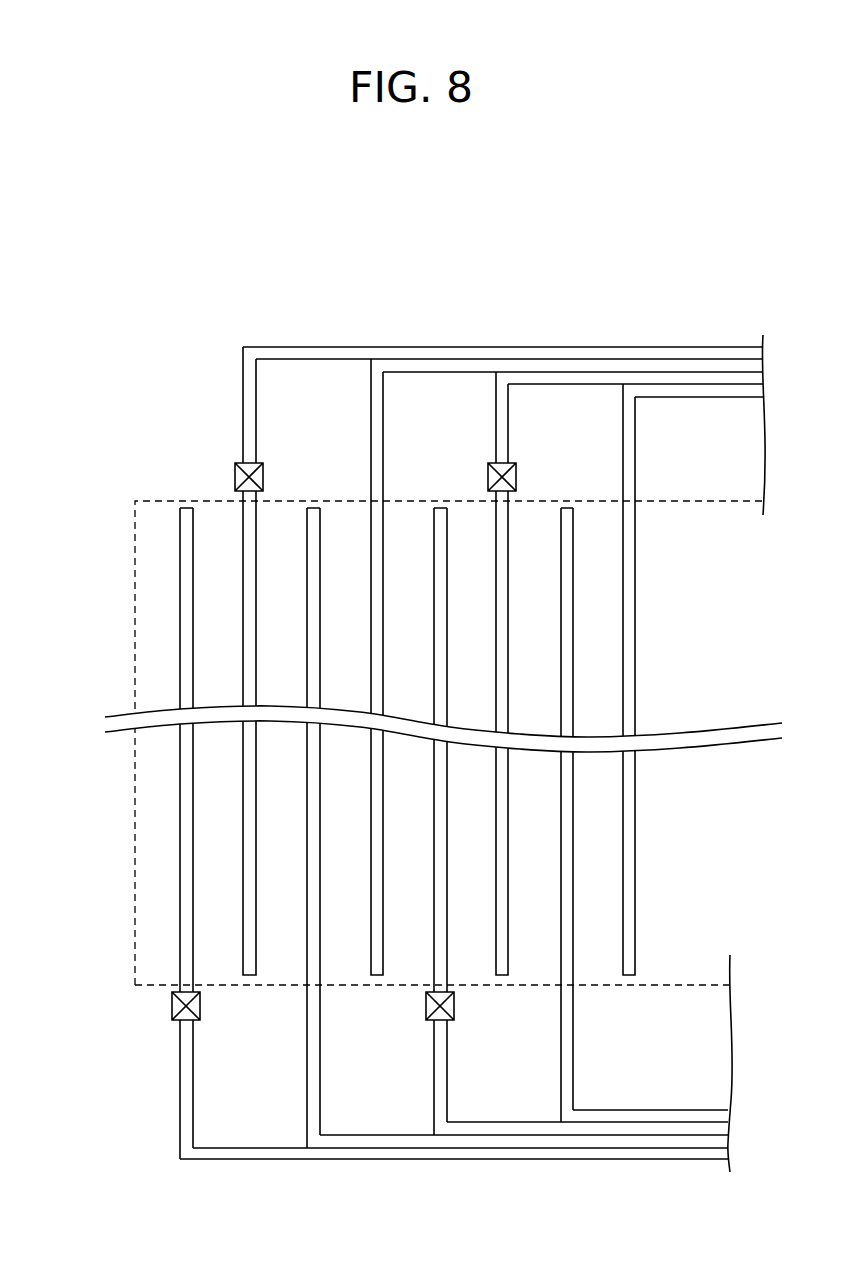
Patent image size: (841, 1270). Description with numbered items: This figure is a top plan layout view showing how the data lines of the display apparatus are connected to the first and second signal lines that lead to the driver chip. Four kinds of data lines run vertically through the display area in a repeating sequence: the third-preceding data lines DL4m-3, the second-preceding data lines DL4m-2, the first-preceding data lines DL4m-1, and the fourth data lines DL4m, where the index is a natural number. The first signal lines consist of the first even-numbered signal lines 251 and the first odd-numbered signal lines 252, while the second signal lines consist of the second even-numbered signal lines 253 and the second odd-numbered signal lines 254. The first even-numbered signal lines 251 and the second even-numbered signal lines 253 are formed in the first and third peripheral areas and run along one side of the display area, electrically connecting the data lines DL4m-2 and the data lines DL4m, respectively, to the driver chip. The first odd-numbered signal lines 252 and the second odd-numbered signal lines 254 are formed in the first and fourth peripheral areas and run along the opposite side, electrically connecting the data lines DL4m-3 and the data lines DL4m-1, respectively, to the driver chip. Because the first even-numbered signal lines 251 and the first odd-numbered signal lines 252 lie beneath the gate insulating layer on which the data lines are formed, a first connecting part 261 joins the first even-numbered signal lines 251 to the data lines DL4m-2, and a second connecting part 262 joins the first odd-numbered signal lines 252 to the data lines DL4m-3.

The first even-numbered signal lines 251 is at (394, 353).
The first odd-numbered signal lines 252 is at (395, 1161).
The second even-numbered signal lines 253 is at (496, 366).
The second odd-numbered signal lines 254 is at (499, 1141).
The first connecting part 261 is at (233, 477).
The second connecting part 262 is at (171, 1003).
The (4m−3)-th data lines DL4m-3 is at (185, 564).
The (4m−2)-th data lines DL4m-2 is at (247, 592).
The (4m−1)-th data lines DL4m-1 is at (310, 619).
The 4m-th data lines DL4m is at (373, 648).